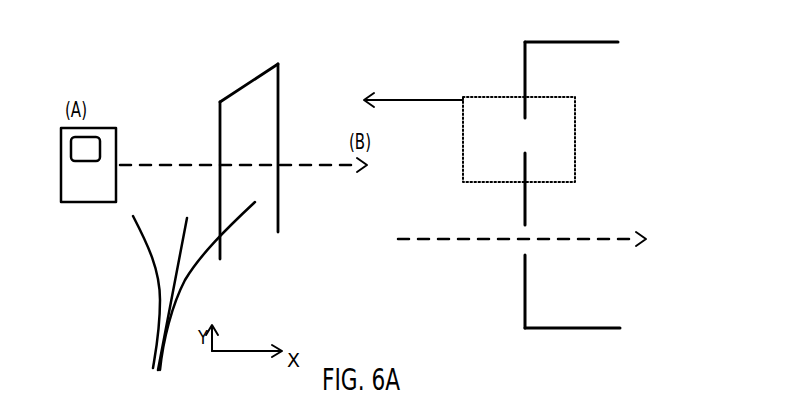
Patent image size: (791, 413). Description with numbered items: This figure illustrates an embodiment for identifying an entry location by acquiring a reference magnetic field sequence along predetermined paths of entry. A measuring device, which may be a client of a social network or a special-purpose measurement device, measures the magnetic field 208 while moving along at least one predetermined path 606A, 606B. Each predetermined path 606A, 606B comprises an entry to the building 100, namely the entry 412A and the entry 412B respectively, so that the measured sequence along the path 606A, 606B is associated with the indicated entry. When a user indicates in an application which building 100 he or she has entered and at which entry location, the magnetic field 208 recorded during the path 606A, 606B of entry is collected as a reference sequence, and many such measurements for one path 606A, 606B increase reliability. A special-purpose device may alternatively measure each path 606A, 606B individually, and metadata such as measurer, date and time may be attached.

The entry 412A is at (233, 90).
The entry 412B is at (556, 236).
The magnetic field 208 is at (150, 335).
The predetermined path 606A is at (322, 165).
The predetermined path 606B is at (437, 239).
The building 100 is at (509, 185).